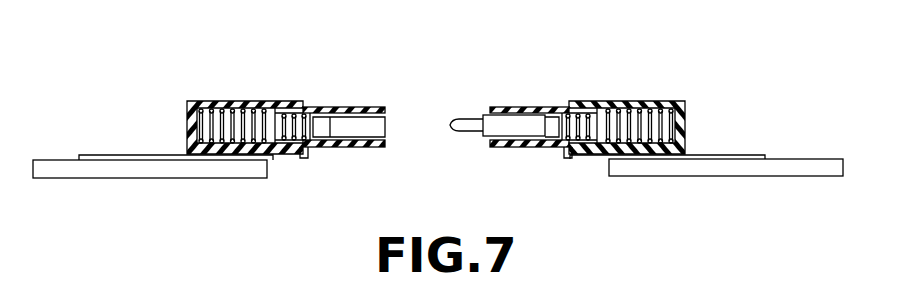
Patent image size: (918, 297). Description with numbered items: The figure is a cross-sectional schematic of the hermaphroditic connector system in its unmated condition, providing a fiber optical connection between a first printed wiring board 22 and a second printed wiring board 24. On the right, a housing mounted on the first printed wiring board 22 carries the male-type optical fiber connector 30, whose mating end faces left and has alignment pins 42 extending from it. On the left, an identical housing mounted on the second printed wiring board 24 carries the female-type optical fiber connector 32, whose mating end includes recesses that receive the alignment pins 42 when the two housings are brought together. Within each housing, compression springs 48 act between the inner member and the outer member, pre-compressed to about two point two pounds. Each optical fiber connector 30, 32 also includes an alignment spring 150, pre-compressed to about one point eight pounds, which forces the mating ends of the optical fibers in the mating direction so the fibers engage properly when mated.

The first printed wiring board 22 is at (713, 175).
The second printed wiring board 24 is at (99, 177).
The male-type optical fiber connector 30 is at (530, 107).
The female-type optical fiber connector 32 is at (357, 107).
The alignment pins 42 is at (472, 135).
The springs 48 is at (230, 100).
The alignment spring 150 is at (303, 158).